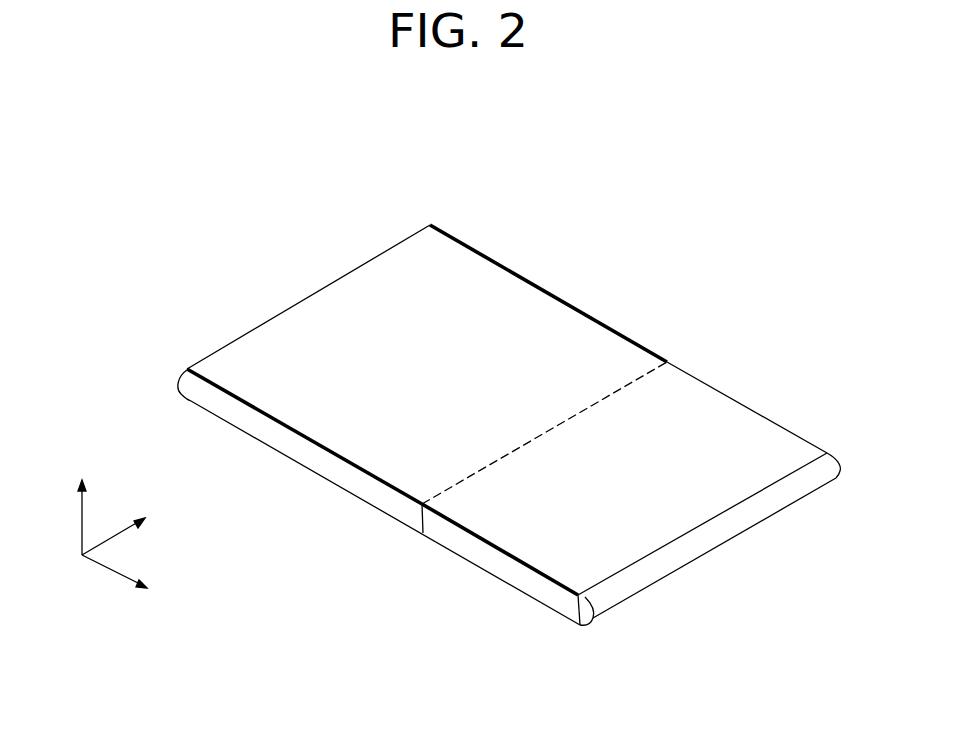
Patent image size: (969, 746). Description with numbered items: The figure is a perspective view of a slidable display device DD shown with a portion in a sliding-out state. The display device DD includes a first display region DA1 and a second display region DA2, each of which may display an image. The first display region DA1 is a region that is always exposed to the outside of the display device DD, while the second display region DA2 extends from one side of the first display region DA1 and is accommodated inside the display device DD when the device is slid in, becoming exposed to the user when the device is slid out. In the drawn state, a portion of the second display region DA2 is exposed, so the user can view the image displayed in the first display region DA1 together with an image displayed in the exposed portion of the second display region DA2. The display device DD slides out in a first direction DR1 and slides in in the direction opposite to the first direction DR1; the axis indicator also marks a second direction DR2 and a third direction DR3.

The display device DD is at (509, 395).
The first display region DA1 is at (324, 322).
The second display region DA2 is at (748, 428).
The first direction DR1 is at (133, 582).
The second direction DR2 is at (133, 529).
The third direction DR3 is at (81, 503).